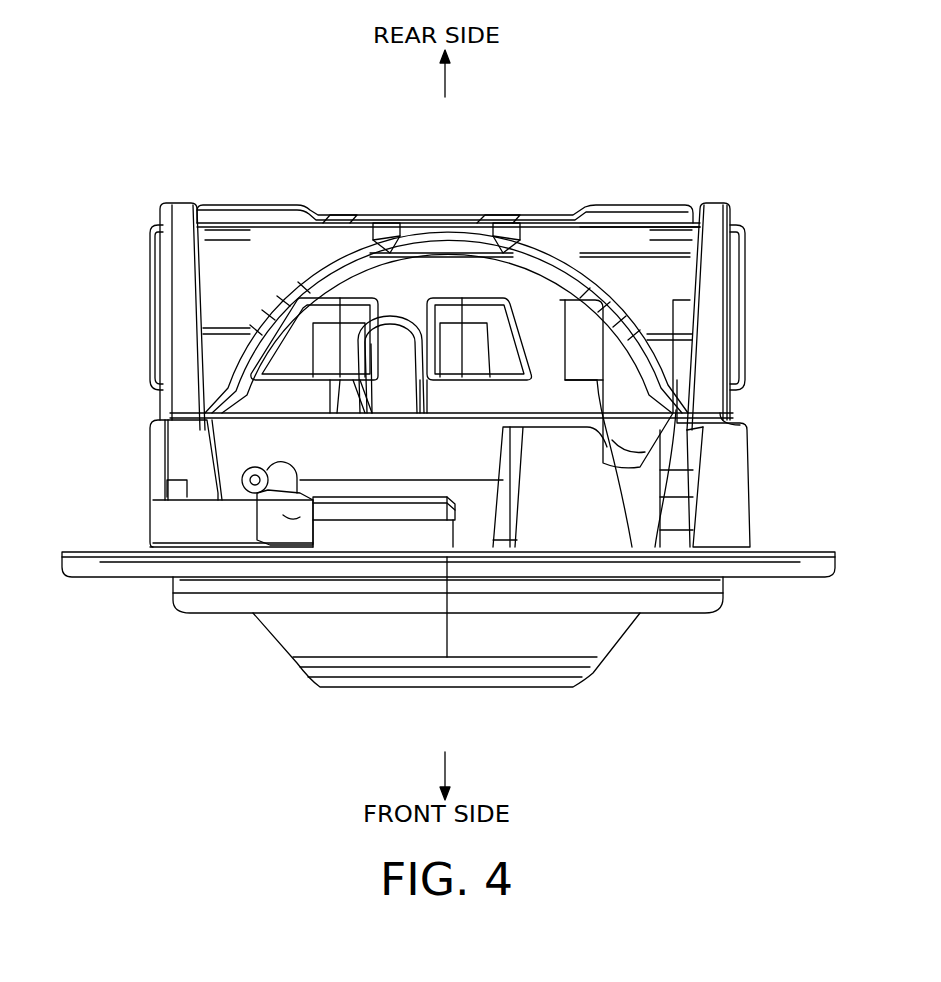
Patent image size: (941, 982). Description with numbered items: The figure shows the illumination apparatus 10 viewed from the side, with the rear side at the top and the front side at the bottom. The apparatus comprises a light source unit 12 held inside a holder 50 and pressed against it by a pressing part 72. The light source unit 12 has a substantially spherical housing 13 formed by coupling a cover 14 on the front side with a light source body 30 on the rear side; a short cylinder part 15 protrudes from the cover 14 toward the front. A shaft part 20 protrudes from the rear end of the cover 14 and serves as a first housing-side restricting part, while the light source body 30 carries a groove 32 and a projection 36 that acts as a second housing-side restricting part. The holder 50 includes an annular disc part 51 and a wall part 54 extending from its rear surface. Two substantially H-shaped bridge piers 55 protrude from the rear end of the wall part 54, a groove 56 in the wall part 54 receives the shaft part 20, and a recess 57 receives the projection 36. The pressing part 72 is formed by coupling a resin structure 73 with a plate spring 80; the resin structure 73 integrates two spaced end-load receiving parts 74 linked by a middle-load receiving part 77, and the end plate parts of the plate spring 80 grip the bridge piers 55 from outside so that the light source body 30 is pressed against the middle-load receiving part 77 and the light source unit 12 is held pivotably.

The illumination apparatus 10 is at (818, 201).
The light source unit 12 is at (370, 279).
The housing 13 is at (428, 278).
The cover 14 is at (250, 434).
The short cylinder part 15 is at (591, 673).
The shaft part 20 is at (262, 453).
The light source body 30 is at (473, 277).
The groove 32 is at (554, 322).
The projection 36 is at (652, 400).
The holder 50 is at (812, 549).
The disc part 51 is at (813, 580).
The wall part 54 is at (733, 463).
The bridge pier 55 is at (182, 322).
The groove 56 is at (303, 530).
The recess 57 is at (673, 510).
The pressing part 72 is at (712, 204).
The resin structure 73 is at (597, 251).
The end-load receiving part 74 is at (250, 251).
The middle-load receiving part 77 is at (449, 236).
The plate spring 80 is at (744, 274).